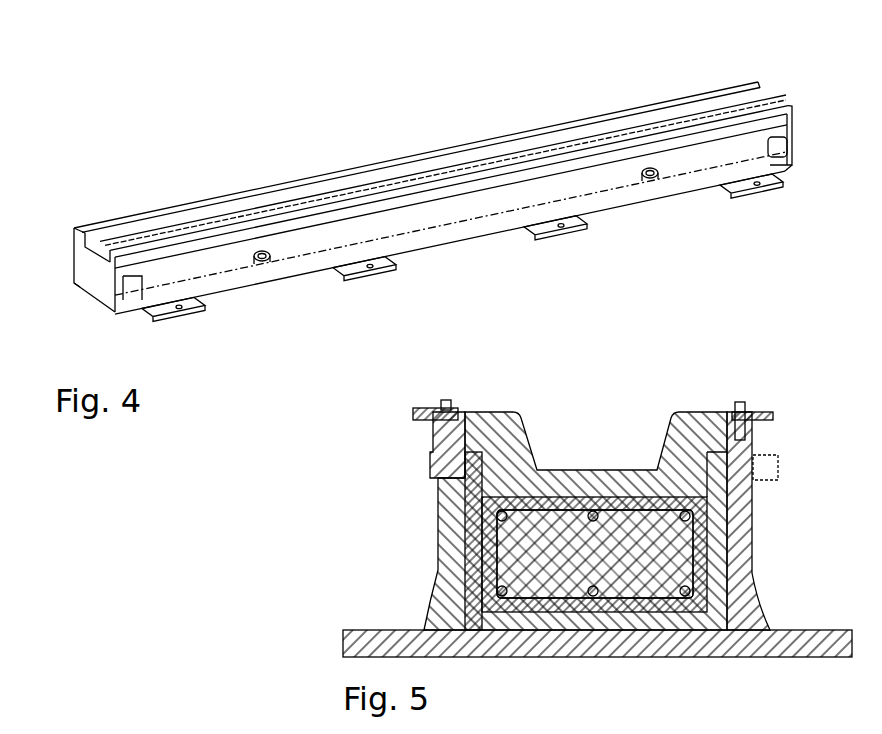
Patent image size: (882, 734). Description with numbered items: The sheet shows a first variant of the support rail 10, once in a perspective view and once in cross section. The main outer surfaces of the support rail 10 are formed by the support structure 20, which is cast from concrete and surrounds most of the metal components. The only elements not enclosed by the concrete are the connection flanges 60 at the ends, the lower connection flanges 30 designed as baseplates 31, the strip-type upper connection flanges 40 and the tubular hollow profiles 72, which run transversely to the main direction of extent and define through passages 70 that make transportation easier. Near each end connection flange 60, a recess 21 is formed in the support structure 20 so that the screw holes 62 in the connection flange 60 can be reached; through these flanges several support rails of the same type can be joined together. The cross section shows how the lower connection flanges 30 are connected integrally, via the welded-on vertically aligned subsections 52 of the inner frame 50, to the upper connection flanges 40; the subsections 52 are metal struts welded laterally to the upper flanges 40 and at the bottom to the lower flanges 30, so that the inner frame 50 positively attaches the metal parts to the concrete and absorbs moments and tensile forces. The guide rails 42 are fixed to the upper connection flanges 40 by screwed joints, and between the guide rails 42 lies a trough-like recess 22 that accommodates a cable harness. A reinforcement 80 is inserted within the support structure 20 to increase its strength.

In FIG. 4, the support rail 10 is at (330, 108).
In FIG. 4, the support structure 20 is at (432, 153).
In FIG. 5, the support structure 20 is at (443, 617).
In FIG. 4, the recess 21 is at (130, 296).
In FIG. 4, the trough-like recess 22 is at (585, 138).
In FIG. 5, the trough-like recess 22 is at (570, 432).
In FIG. 4, the lower connection flange 30 is at (495, 277).
In FIG. 5, the lower connection flange 30 is at (555, 619).
In FIG. 4, the baseplate 31 is at (188, 308).
In FIG. 5, the baseplate 31 is at (357, 646).
In FIG. 4, the upper connection flange 40 is at (132, 215).
In FIG. 5, the upper connection flange 40 is at (455, 457).
In FIG. 5, the guide rail 42 is at (442, 414).
In FIG. 5, the inner frame 50 is at (464, 552).
In FIG. 5, the subsection 52 is at (483, 598).
In FIG. 4, the connection flange 60 is at (792, 146).
In FIG. 4, the screw hole 62 is at (113, 292).
In FIG. 4, the through passage 70 is at (258, 265).
In FIG. 4, the tubular hollow profile 72 is at (270, 260).
In FIG. 5, the reinforcement 80 is at (686, 594).